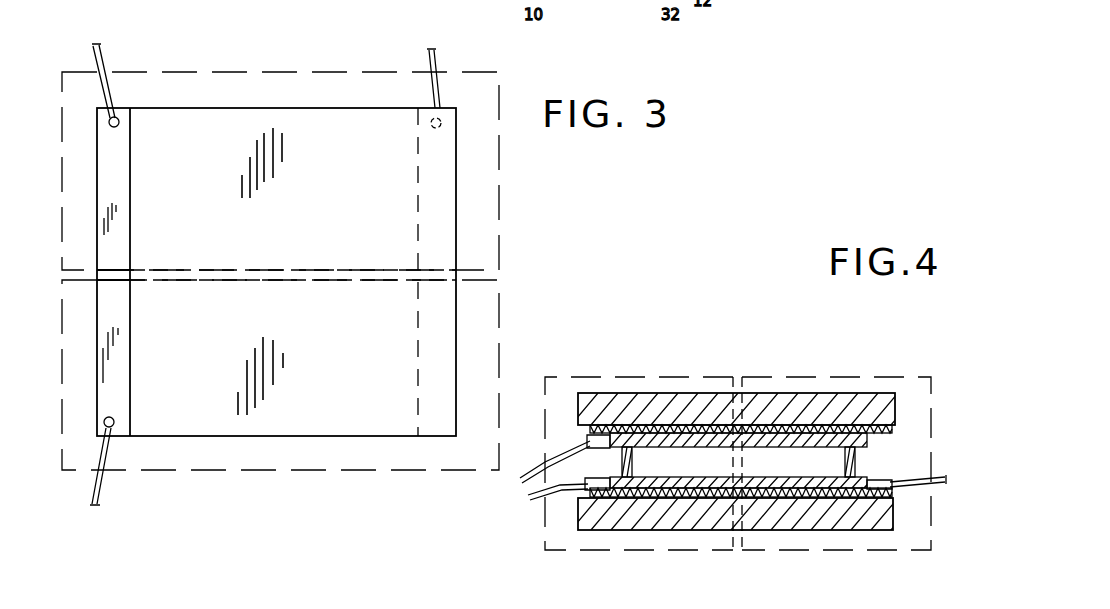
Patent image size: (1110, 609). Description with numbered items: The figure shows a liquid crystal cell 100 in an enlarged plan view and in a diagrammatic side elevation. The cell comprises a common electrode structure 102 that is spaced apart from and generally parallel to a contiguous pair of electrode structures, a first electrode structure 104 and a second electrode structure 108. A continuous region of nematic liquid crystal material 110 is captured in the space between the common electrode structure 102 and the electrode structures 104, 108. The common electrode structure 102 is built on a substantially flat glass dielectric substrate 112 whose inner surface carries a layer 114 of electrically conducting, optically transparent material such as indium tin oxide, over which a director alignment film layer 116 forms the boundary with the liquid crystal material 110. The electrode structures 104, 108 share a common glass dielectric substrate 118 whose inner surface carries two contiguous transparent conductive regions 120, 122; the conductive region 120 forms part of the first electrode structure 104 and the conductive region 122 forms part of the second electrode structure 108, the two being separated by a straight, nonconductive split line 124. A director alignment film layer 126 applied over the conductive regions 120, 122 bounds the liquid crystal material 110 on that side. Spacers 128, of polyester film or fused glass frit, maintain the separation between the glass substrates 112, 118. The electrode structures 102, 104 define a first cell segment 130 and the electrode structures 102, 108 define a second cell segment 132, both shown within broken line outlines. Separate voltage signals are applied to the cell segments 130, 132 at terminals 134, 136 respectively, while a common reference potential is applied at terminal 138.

In FIG. 4, the liquid crystal cell 100 is at (741, 348).
In FIG. 3, the common electrode structure 102 is at (211, 104).
In FIG. 4, the common electrode structure 102 is at (574, 404).
In FIG. 3, the first electrode structure 104 is at (122, 104).
In FIG. 4, the first electrode structure 104 is at (574, 520).
In FIG. 3, the second electrode structure 108 is at (119, 441).
In FIG. 4, the second electrode structure 108 is at (897, 522).
In FIG. 4, the nematic liquid crystal material 110 is at (801, 472).
In FIG. 3, the glass dielectric substrate 112 is at (444, 177).
In FIG. 4, the glass dielectric substrate 112 is at (772, 392).
In FIG. 4, the electrically conducting, optically transparent layer 114 is at (660, 425).
In FIG. 4, the director alignment film layer 116 is at (590, 442).
In FIG. 4, the common glass dielectric substrate 118 is at (860, 531).
In FIG. 3, the conductive region 120 is at (112, 172).
In FIG. 4, the conductive region 120 is at (664, 497).
In FIG. 3, the conductive region 122 is at (108, 370).
In FIG. 4, the conductive region 122 is at (805, 498).
In FIG. 3, the split line 124 is at (209, 275).
In FIG. 4, the split line 124 is at (734, 488).
In FIG. 4, the director alignment film layer 126 is at (875, 483).
In FIG. 4, the spacers 128 is at (633, 458).
In FIG. 3, the first cell segment 130 is at (281, 68).
In FIG. 4, the first cell segment 130 is at (604, 370).
In FIG. 3, the second cell segment 132 is at (261, 475).
In FIG. 4, the second cell segment 132 is at (840, 372).
In FIG. 3, the terminal 134 is at (97, 48).
In FIG. 4, the terminal 134 is at (557, 494).
In FIG. 3, the terminal 136 is at (92, 498).
In FIG. 4, the terminal 136 is at (945, 480).
In FIG. 3, the terminal 138 is at (443, 62).
In FIG. 4, the terminal 138 is at (535, 470).